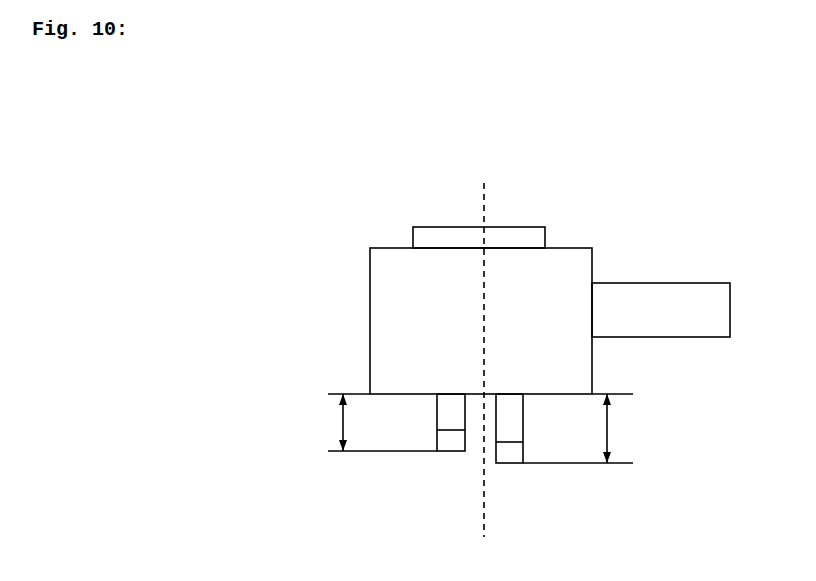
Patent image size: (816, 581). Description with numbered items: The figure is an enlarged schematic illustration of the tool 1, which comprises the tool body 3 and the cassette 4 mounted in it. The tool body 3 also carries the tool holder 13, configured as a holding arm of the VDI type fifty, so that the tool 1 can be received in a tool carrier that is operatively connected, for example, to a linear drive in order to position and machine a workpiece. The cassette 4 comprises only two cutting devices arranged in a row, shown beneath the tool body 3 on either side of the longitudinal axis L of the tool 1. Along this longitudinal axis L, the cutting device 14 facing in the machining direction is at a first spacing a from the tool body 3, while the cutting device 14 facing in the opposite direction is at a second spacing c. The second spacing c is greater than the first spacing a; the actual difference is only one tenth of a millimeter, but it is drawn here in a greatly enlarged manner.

The tool 1 is at (457, 124).
The tool body 3 is at (370, 297).
The cassette 4 is at (413, 238).
The tool holder 13 is at (658, 283).
The cutting device 14 is at (447, 453).
The longitudinal axis L is at (483, 212).
The first spacing a is at (343, 423).
The second spacing c is at (607, 426).